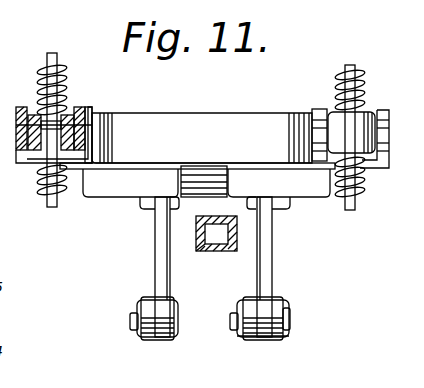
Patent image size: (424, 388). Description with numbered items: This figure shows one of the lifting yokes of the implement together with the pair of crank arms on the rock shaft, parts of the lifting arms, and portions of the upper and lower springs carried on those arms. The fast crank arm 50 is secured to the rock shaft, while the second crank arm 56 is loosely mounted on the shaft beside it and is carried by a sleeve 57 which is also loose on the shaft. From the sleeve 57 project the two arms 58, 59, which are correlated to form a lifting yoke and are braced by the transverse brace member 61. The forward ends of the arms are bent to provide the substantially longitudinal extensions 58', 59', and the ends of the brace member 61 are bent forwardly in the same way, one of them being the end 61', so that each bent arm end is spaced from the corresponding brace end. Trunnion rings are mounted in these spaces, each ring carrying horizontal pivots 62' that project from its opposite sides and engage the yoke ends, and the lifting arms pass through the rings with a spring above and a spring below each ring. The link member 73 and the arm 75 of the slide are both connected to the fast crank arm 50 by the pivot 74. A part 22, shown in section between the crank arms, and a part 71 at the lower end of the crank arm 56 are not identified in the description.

The shaft block 22 is at (206, 252).
The crank arm 50 is at (266, 268).
The second crank arm 56 is at (160, 271).
The sleeve 57 is at (206, 168).
The arm 58 is at (130, 183).
The forwardly bent end 58' is at (47, 122).
The arm 59 is at (279, 183).
The forwardly bent end 59' is at (378, 125).
The brace member 61 is at (202, 129).
The forwardly bent end 61' is at (105, 118).
The horizontal pivot 62' is at (97, 130).
The wheel 71 is at (160, 338).
The link member 73 is at (250, 338).
The pivot 74 is at (289, 316).
The arm 75 is at (281, 339).